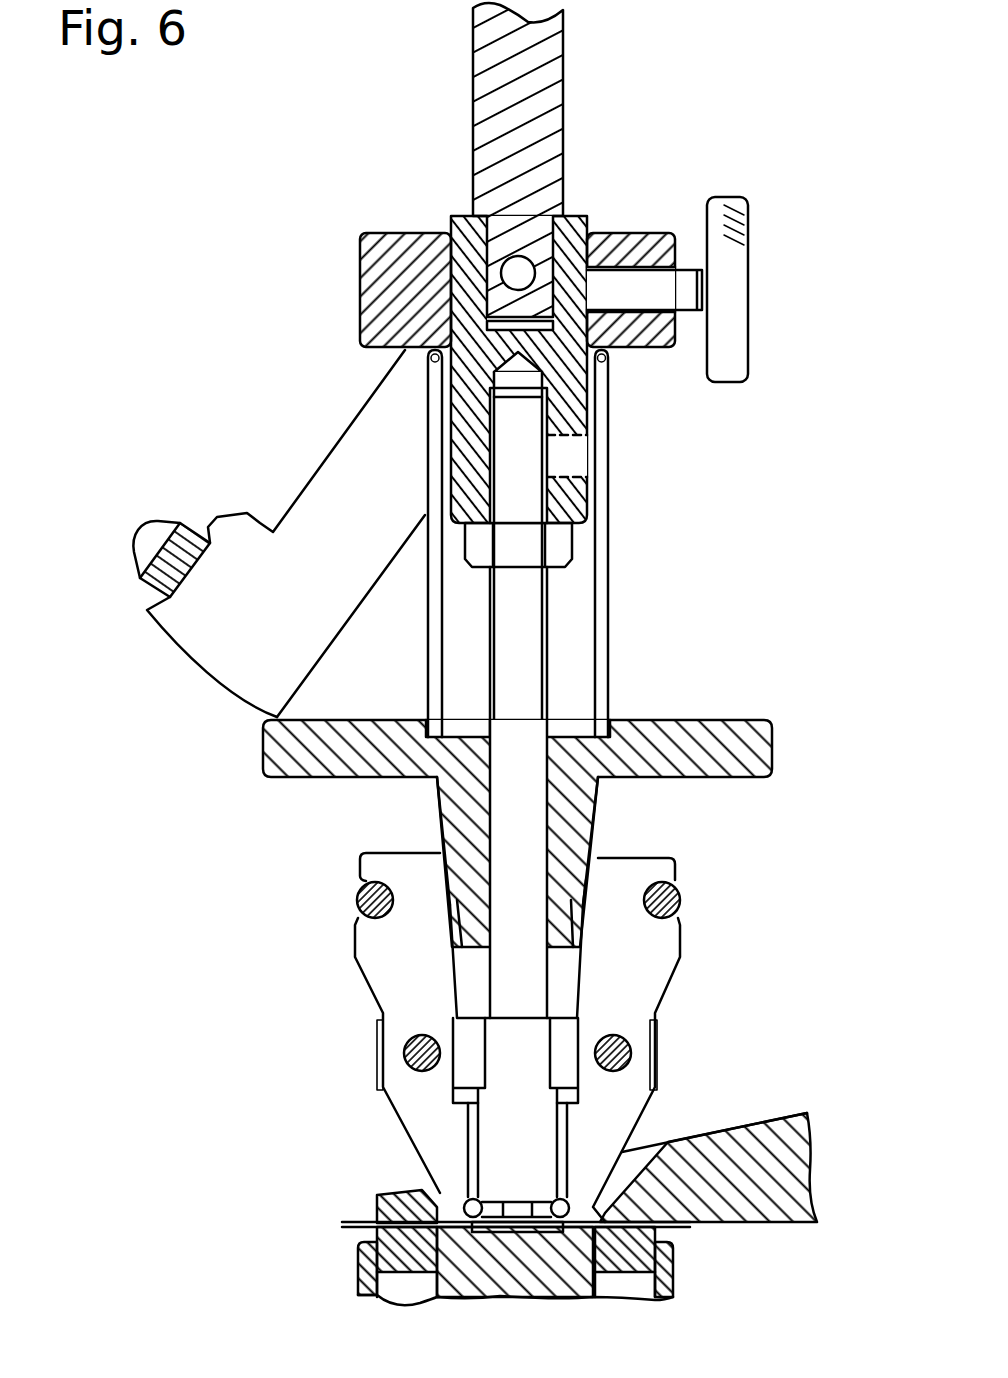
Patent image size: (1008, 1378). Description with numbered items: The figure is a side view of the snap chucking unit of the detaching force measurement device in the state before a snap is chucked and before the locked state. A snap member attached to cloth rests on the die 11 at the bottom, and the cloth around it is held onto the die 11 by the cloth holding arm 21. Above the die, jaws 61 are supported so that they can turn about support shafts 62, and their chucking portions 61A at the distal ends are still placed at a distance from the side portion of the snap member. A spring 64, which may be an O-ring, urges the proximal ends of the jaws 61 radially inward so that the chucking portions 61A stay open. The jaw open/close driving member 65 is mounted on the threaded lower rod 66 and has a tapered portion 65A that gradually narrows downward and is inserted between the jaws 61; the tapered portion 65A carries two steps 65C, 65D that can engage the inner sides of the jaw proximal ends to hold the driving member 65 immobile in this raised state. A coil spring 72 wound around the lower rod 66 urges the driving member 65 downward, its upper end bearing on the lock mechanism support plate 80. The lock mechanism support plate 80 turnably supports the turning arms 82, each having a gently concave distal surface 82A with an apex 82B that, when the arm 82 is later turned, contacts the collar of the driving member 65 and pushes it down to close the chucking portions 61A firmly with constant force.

The die 11 is at (463, 1267).
The cloth holding arm 21 is at (712, 1128).
The jaw 61 is at (358, 972).
The chucking portion 61A is at (460, 1208).
The support shaft 62 is at (404, 1053).
The spring 64 is at (357, 900).
The jaw open/close driving member 65 is at (765, 720).
The tapered portion 65A is at (443, 832).
The step 65C is at (597, 867).
The step 65D is at (583, 933).
The lower rod 66 is at (547, 658).
The spring 72 is at (598, 531).
The lock mechanism support plate 80 is at (640, 233).
The turning arm 82 is at (333, 450).
The distal surface 82A is at (167, 634).
The apex 82B is at (217, 687).